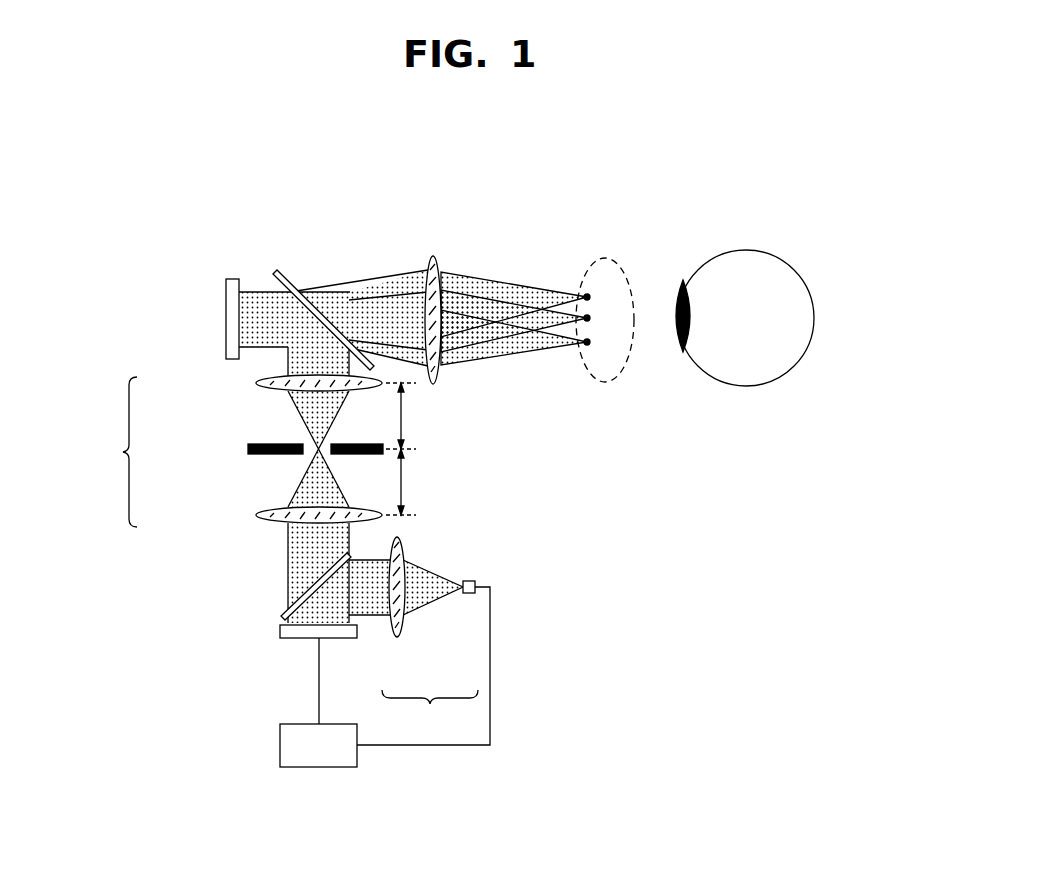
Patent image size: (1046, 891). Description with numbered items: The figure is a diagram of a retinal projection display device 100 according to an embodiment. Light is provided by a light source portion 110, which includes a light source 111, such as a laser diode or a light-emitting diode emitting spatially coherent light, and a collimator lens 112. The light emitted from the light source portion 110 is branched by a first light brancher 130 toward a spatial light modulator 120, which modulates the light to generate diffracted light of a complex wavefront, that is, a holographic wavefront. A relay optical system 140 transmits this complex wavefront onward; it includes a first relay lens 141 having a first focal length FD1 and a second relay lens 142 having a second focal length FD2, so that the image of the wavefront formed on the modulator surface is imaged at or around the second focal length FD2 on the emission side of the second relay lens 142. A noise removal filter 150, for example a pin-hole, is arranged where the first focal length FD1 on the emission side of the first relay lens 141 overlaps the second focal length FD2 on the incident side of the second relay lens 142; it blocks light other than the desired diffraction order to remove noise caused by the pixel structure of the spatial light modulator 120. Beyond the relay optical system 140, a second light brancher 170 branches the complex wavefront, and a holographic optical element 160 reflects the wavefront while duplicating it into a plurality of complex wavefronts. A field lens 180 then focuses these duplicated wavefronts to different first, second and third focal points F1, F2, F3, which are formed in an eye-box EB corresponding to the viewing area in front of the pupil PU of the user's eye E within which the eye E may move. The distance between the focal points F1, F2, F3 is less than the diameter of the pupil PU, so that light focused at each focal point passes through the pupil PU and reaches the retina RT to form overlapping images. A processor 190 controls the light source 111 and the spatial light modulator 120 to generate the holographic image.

The retinal projection display device 100 is at (690, 170).
The light source portion 110 is at (428, 636).
The light source 111 is at (467, 593).
The collimator lens 112 is at (397, 637).
The spatial light modulator 120 is at (280, 631).
The first light brancher 130 is at (304, 586).
The relay optical system 140 is at (233, 452).
The first relay lens 141 is at (256, 515).
The second relay lens 142 is at (256, 383).
The noise removal filter 150 is at (248, 449).
The holographic optical element 160 is at (226, 323).
The second light brancher 170 is at (332, 318).
The field lens 180 is at (438, 378).
The processor 190 is at (280, 747).
The first focal length FD1 is at (418, 482).
The second focal length FD2 is at (418, 416).
The first focal point F1 is at (600, 342).
The second focal point F2 is at (600, 319).
The third focal point F3 is at (600, 297).
The eye-box EB is at (600, 258).
The eye E is at (743, 387).
The pupil PU is at (682, 345).
The retina RT is at (796, 347).